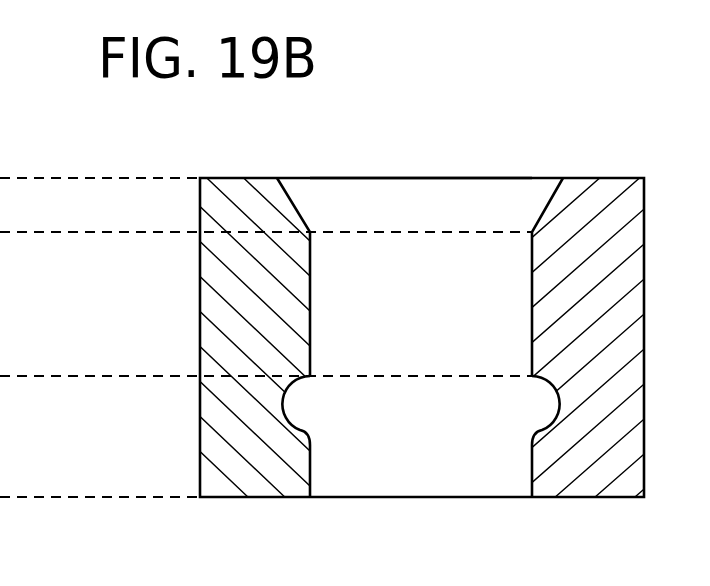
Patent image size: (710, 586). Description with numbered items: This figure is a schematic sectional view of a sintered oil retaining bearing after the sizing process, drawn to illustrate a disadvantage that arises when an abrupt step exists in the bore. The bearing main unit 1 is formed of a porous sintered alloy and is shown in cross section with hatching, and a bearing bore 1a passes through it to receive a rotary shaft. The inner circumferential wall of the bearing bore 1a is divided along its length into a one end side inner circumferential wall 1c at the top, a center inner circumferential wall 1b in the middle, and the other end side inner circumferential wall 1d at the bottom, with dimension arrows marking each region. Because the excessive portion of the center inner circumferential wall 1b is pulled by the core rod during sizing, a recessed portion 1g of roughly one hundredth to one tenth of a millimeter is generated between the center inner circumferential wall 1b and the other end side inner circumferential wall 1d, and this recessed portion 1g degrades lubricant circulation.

The bearing main unit 1 is at (618, 313).
The bearing bore 1a is at (460, 202).
The center inner circumferential wall 1b is at (354, 232).
The one end side inner circumferential wall 1c is at (354, 178).
The other end side inner circumferential wall 1d is at (354, 376).
The recessed portion 1g is at (292, 398).